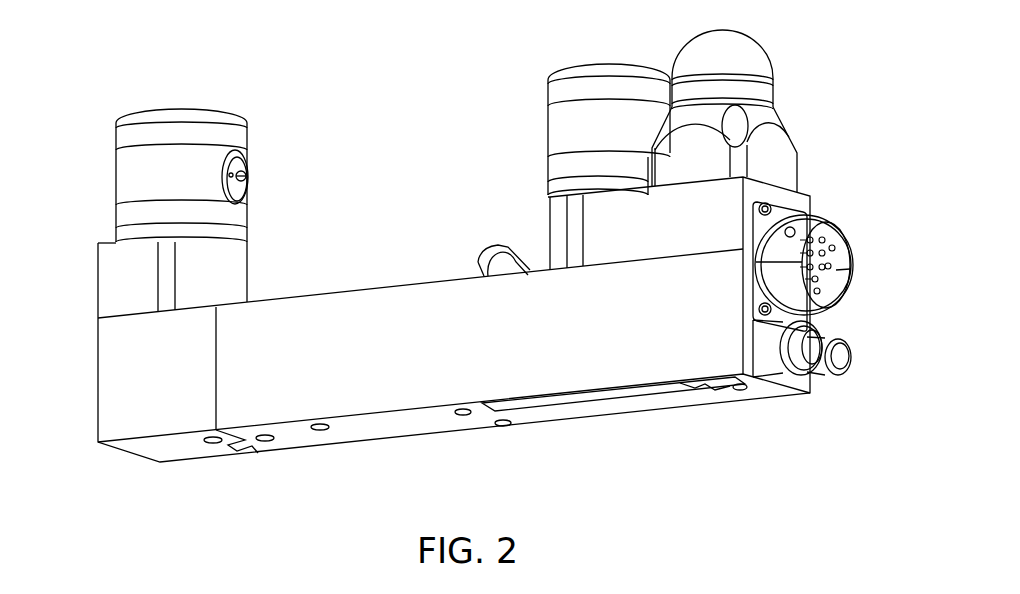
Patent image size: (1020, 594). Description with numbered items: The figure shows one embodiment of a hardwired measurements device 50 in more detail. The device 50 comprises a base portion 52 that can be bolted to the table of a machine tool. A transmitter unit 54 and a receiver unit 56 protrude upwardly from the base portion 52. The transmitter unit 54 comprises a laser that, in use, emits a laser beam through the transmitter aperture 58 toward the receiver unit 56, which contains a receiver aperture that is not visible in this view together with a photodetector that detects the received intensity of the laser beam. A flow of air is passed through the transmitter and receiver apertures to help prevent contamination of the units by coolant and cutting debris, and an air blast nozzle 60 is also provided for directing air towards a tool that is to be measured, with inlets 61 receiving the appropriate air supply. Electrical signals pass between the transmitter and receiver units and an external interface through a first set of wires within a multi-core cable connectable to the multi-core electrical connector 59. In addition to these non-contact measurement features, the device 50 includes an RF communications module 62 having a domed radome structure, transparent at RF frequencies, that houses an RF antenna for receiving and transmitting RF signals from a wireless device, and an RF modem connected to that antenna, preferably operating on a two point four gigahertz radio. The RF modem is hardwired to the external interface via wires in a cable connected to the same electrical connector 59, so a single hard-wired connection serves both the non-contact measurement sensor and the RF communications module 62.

The hardwired measurements device 50 is at (462, 267).
The base portion 52 is at (427, 349).
The transmitter unit 54 is at (206, 112).
The receiver unit 56 is at (608, 80).
The transmitter aperture 58 is at (250, 176).
The multi-core electrical connector 59 is at (845, 241).
The air blast nozzle 60 is at (496, 248).
The inlets 61 is at (814, 378).
The RF communications module 62 is at (794, 108).